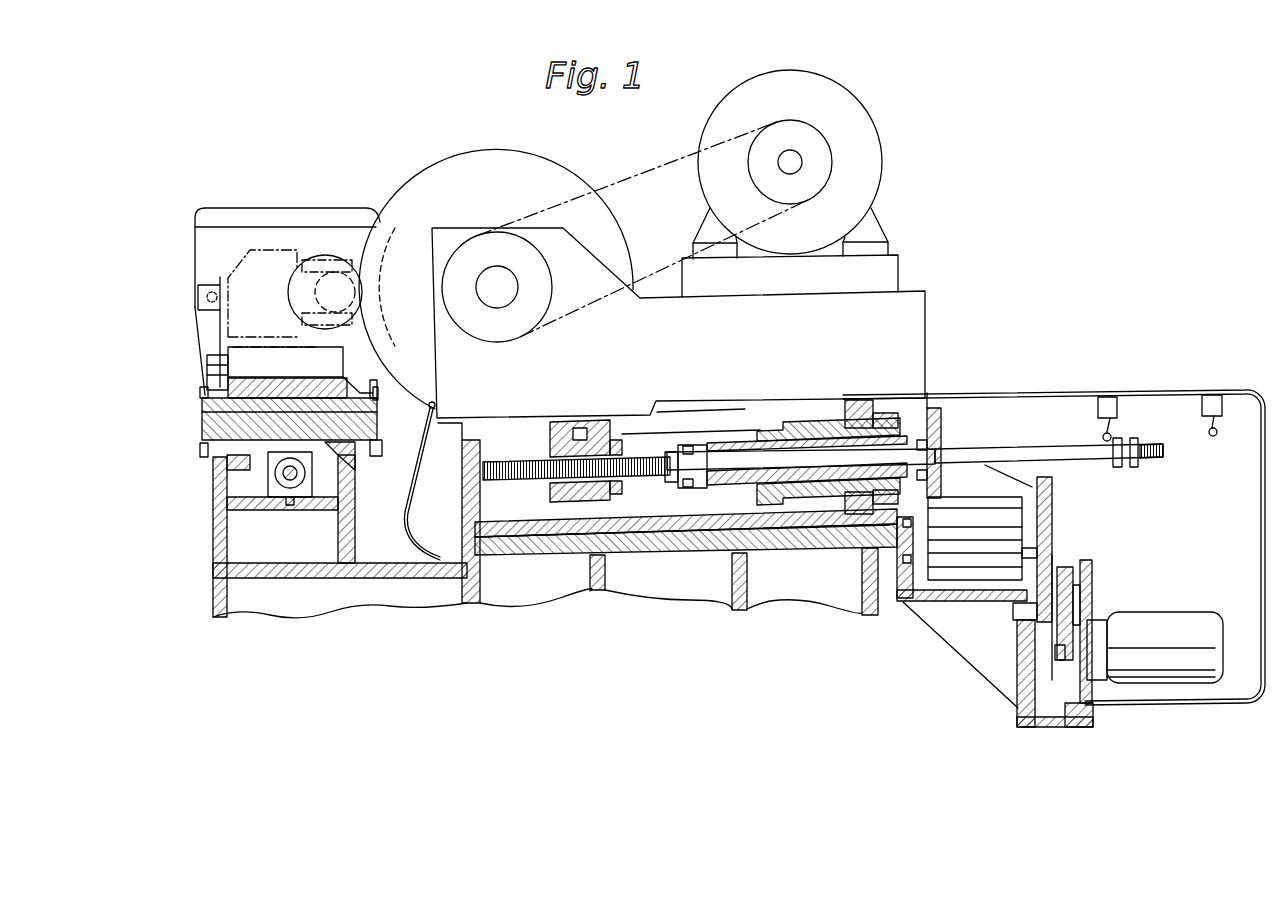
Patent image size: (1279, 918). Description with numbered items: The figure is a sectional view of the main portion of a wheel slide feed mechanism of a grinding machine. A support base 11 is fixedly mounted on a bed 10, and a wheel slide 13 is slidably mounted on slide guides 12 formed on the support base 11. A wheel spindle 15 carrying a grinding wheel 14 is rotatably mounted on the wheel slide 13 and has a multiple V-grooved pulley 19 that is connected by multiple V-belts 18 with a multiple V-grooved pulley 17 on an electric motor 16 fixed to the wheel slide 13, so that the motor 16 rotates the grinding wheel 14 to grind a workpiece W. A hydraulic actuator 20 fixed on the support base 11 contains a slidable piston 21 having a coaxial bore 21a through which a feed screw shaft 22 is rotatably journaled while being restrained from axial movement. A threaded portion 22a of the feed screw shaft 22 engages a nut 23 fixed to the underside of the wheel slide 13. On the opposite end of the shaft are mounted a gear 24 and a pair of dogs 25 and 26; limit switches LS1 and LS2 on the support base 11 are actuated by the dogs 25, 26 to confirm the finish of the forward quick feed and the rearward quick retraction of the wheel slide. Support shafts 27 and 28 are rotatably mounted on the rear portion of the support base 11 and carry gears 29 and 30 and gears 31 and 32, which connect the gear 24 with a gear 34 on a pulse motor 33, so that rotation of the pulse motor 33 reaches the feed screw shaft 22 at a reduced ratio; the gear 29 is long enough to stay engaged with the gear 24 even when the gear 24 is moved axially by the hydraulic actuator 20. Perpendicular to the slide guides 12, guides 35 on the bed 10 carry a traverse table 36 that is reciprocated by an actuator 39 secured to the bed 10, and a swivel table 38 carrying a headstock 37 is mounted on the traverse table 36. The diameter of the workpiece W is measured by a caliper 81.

The bed 10 is at (738, 610).
The support base 11 is at (648, 531).
The slide guides 12 is at (490, 432).
The wheel slide 13 is at (912, 314).
The grinding wheel 14 is at (510, 150).
The wheel spindle 15 is at (490, 283).
The electric motor 16 is at (878, 184).
The multiple V-grooved pulley 17 is at (820, 150).
The multiple V-belts 18 is at (652, 163).
The multiple V-grooved pulley 19 is at (508, 332).
The hydraulic actuator 20 is at (845, 410).
The piston 21 is at (790, 440).
The coaxial bore 21a is at (727, 430).
The feed screw shaft 22 is at (703, 488).
The threaded portion 22a is at (642, 416).
The nut 23 is at (552, 485).
The gear 24 is at (933, 407).
The dog 25 is at (1117, 468).
The dog 26 is at (1136, 468).
The support shaft 27 is at (905, 603).
The support shaft 28 is at (1093, 606).
The gear 29 is at (978, 522).
The gear 30 is at (1043, 485).
The gear 31 is at (1047, 622).
The gear 32 is at (1068, 580).
The pulse motor 33 is at (1167, 674).
The gear 34 is at (1073, 665).
The guides 35 is at (205, 445).
The traverse table 36 is at (205, 421).
The headstock 37 is at (283, 228).
The swivel table 38 is at (212, 362).
The actuator 39 is at (297, 480).
The caliper 81 is at (235, 262).
The workpiece W is at (340, 400).
The limit switch LS1 is at (1108, 398).
The limit switch LS2 is at (1212, 396).